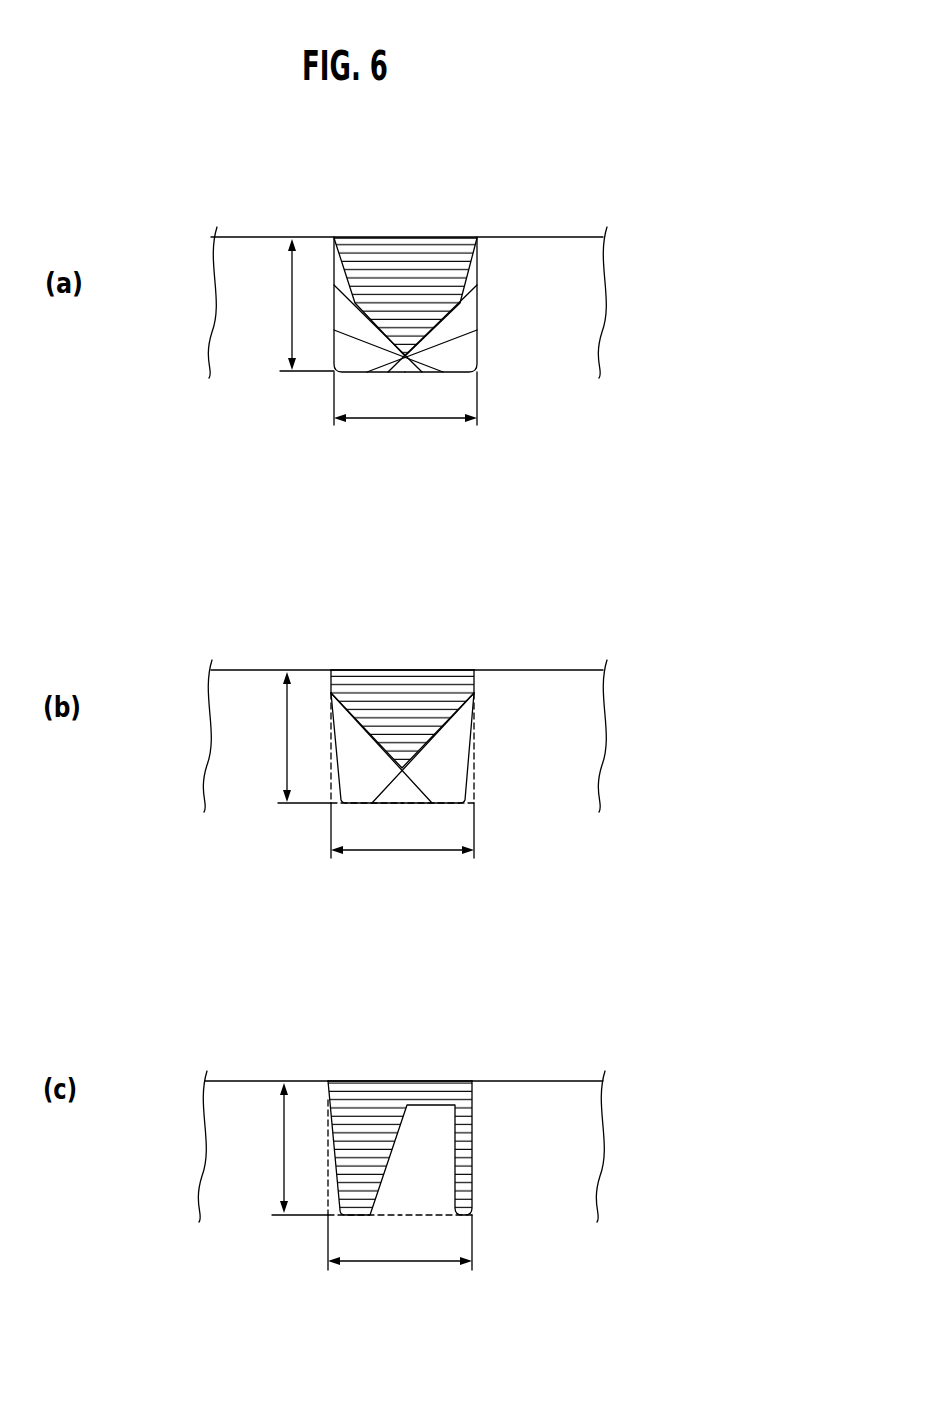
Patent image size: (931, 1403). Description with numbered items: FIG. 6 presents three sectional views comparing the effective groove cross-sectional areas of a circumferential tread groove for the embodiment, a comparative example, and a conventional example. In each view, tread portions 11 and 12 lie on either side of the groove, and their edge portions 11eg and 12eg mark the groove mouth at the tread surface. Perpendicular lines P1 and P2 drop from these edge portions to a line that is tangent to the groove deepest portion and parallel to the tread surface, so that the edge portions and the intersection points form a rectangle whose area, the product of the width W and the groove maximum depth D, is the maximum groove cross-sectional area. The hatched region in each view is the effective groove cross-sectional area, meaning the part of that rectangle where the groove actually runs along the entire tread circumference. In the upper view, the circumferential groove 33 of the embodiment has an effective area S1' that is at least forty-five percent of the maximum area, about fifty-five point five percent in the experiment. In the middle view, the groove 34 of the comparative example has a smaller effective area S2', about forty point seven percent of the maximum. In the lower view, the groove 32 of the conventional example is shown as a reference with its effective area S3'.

The first member 11 is at (262, 226).
The second member 12 is at (557, 226).
The edge portion 11eg is at (334, 237).
The edge portion 12eg is at (477, 237).
The circumferential groove 33 is at (402, 226).
The groove (second example) 34 is at (402, 659).
The groove (third example) 32 is at (397, 1069).
The effective groove cross-sectional area S1' is at (407, 258).
The effective groove cross-sectional area S2' is at (404, 683).
The effective groove cross-sectional area S3' is at (401, 1111).
The groove maximum depth D is at (300, 727).
The width W is at (402, 821).
The perpendicular line P1 is at (334, 403).
The perpendicular line P2 is at (477, 403).